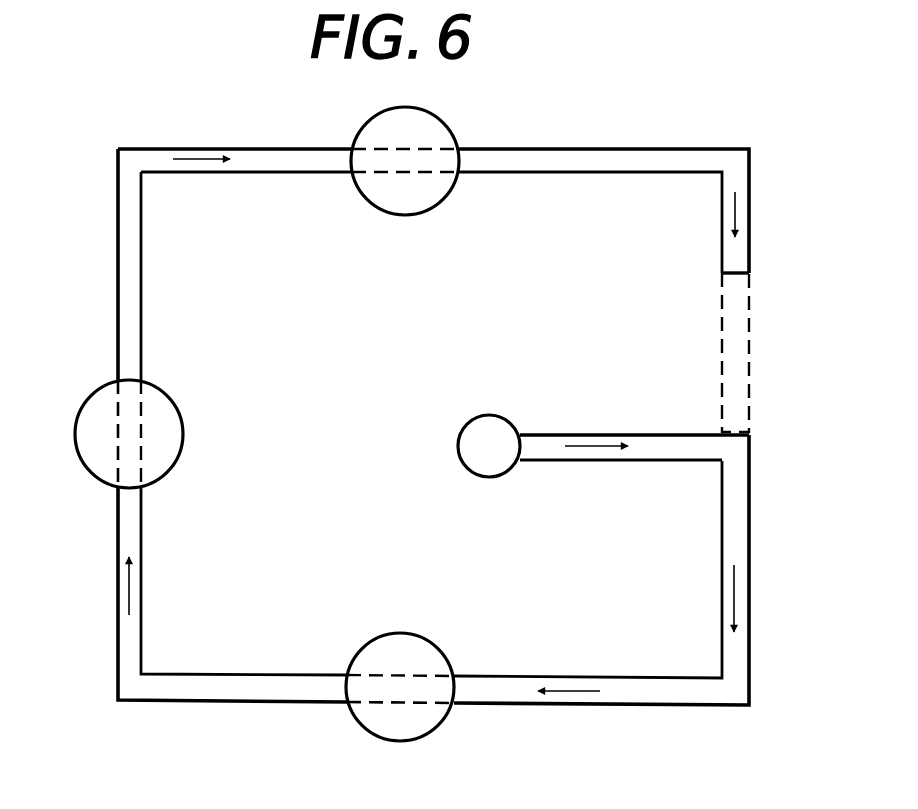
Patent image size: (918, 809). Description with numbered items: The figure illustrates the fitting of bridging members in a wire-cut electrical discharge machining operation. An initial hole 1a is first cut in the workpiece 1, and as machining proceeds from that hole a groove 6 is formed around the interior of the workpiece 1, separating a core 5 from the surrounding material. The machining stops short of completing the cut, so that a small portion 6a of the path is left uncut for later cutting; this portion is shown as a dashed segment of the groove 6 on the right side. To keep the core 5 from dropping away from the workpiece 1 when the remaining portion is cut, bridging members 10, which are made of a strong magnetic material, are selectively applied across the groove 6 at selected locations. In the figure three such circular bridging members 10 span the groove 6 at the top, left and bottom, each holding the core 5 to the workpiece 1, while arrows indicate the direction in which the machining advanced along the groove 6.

The workpiece 1 is at (794, 211).
The initial hole 1a is at (482, 441).
The core 5 is at (514, 610).
The groove 6 is at (736, 670).
The small portion 6a is at (750, 365).
The bridging member 10 is at (440, 138).